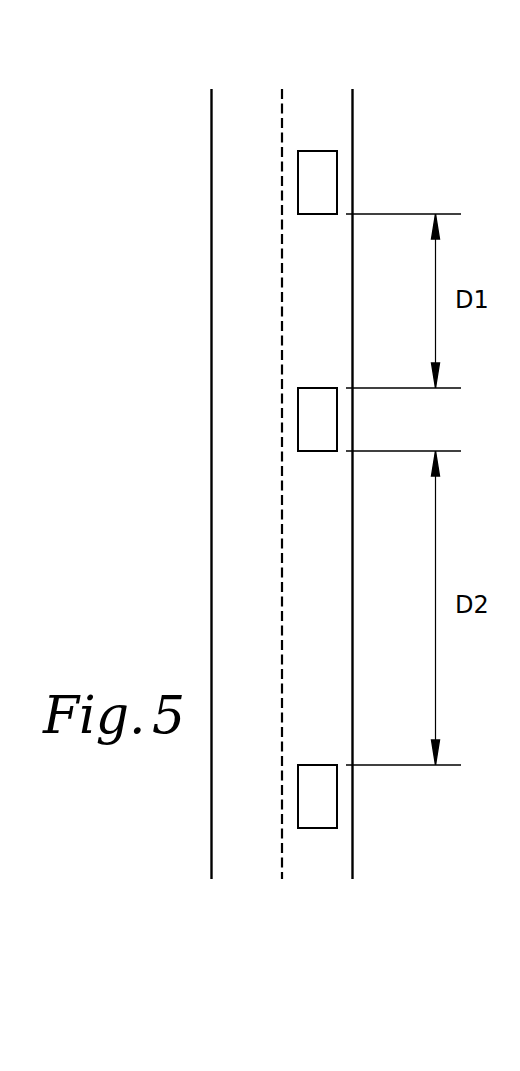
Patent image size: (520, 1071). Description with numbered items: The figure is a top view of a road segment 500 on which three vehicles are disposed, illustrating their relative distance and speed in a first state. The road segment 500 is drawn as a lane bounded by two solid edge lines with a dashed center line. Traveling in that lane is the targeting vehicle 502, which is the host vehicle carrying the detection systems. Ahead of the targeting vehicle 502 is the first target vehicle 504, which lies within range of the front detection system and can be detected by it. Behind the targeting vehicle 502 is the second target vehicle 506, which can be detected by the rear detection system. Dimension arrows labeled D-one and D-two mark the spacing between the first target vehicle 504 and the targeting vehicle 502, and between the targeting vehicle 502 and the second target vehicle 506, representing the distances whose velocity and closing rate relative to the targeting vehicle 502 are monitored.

The road segment 500 is at (211, 278).
The targeting vehicle 502 is at (337, 419).
The first target vehicle 504 is at (337, 183).
The second target vehicle 506 is at (337, 795).